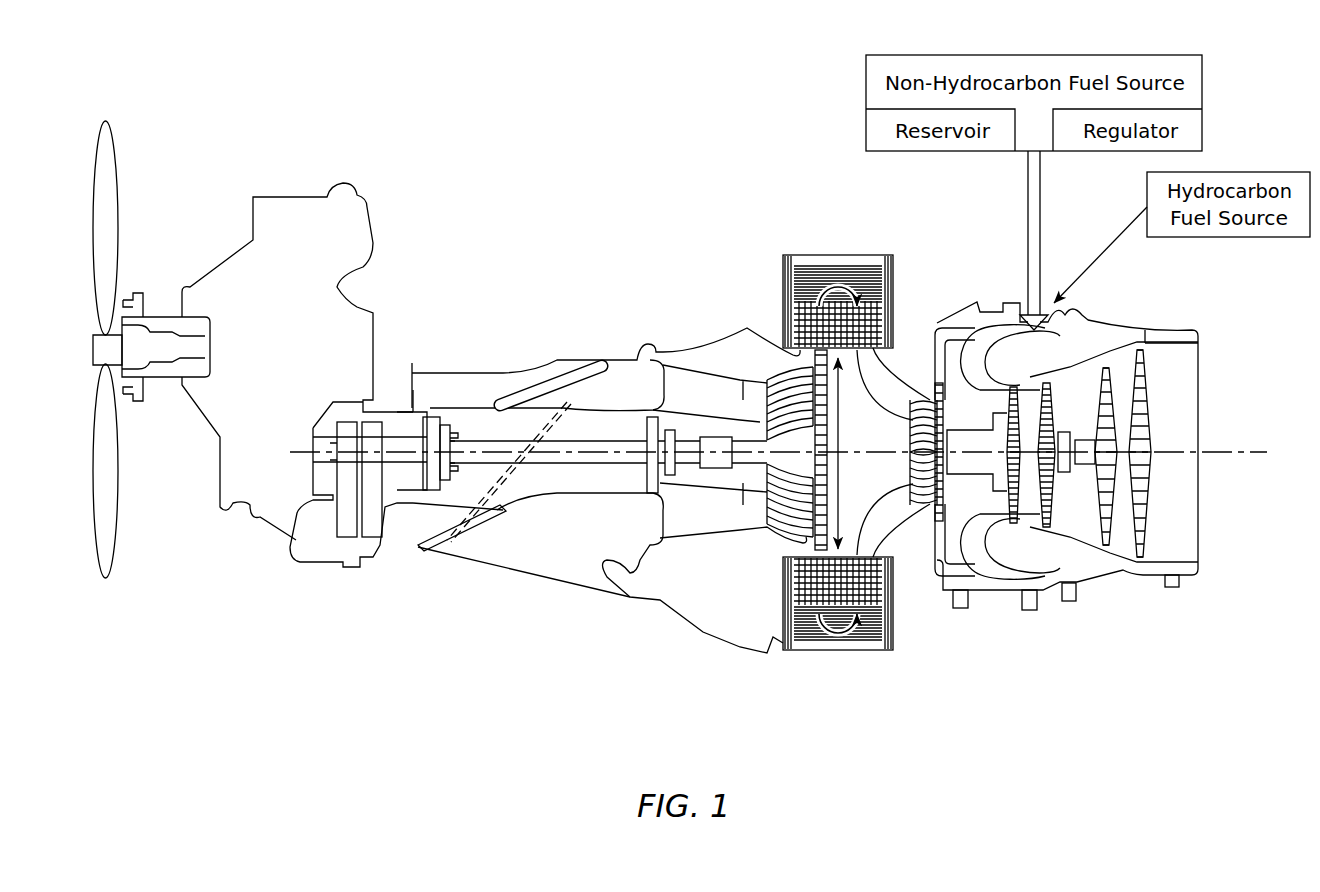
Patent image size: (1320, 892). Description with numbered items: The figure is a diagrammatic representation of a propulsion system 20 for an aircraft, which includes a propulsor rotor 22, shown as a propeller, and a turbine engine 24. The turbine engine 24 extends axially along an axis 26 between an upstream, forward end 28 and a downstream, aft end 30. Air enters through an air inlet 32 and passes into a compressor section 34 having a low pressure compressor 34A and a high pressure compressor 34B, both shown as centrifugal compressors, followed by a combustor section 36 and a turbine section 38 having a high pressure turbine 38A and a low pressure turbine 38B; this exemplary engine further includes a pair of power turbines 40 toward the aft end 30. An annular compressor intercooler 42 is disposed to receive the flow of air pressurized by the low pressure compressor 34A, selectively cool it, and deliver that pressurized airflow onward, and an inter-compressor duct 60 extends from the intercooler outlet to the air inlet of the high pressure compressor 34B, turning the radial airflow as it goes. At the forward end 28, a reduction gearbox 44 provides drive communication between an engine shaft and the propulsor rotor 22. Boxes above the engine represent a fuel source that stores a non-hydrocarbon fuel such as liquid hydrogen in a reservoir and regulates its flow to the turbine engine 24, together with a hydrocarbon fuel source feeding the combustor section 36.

The propulsion system 20 is at (506, 110).
The propulsor rotor 22 is at (134, 250).
The turbine engine 24 is at (991, 699).
The axis 26 is at (1243, 451).
The forward end 28 is at (421, 605).
The aft end 30 is at (1217, 620).
The air inlet 32 is at (547, 580).
The compressor section 34 is at (797, 523).
The low pressure compressor 34A is at (782, 531).
The high pressure compressor 34B is at (922, 528).
The combustor section 36 is at (1066, 330).
The turbine section 38 is at (1055, 526).
The high pressure turbine 38A is at (1010, 536).
The low pressure turbine 38B is at (1054, 538).
The power turbines 40 is at (1123, 563).
The annular compressor intercooler 42 is at (804, 240).
The reduction gearbox 44 is at (337, 566).
The inter-compressor duct 60 is at (873, 387).